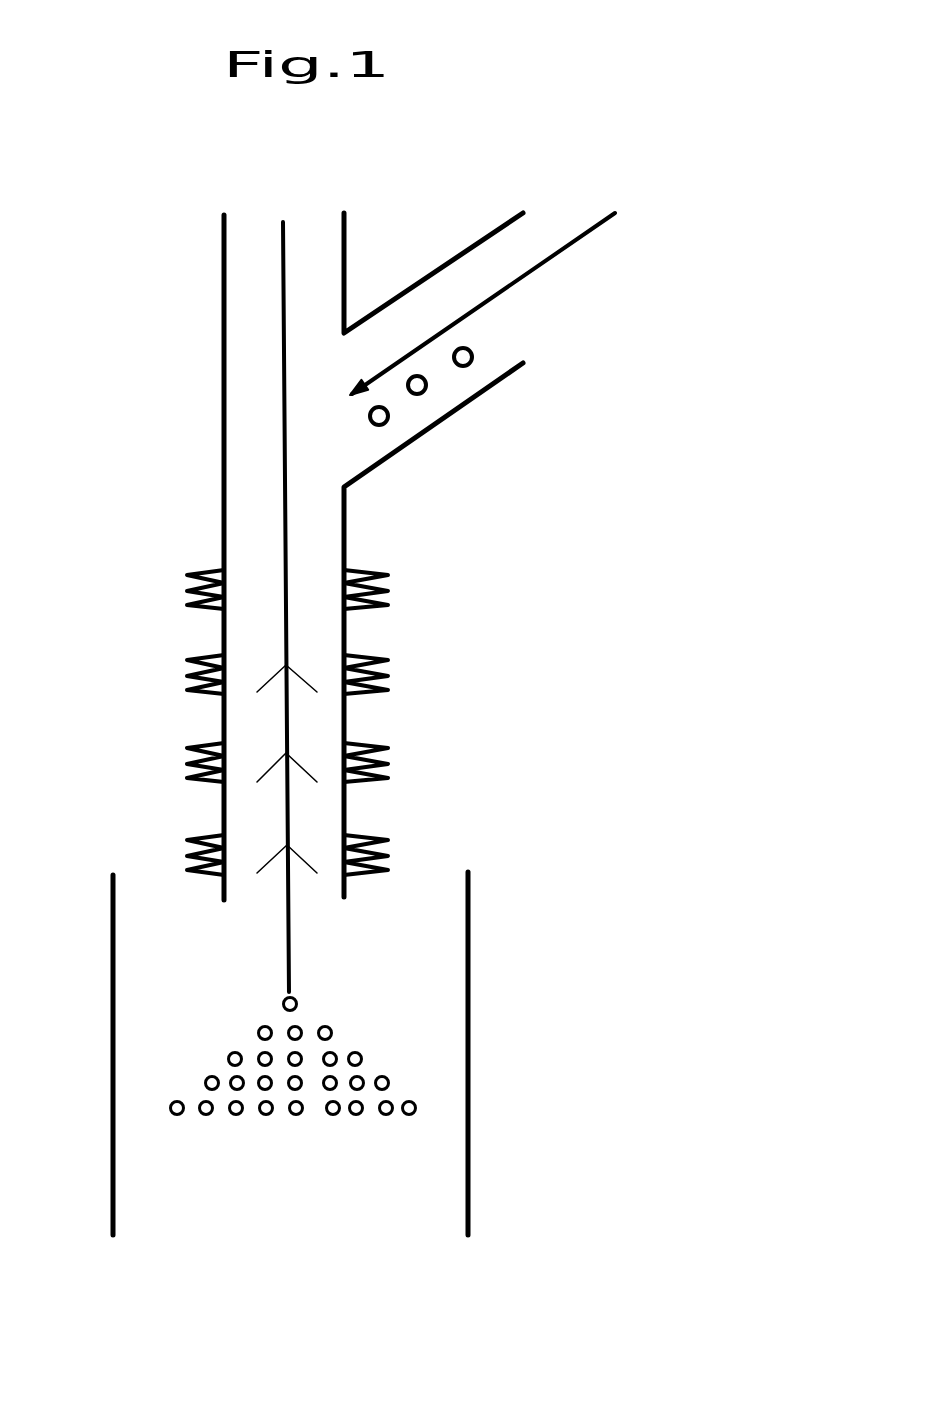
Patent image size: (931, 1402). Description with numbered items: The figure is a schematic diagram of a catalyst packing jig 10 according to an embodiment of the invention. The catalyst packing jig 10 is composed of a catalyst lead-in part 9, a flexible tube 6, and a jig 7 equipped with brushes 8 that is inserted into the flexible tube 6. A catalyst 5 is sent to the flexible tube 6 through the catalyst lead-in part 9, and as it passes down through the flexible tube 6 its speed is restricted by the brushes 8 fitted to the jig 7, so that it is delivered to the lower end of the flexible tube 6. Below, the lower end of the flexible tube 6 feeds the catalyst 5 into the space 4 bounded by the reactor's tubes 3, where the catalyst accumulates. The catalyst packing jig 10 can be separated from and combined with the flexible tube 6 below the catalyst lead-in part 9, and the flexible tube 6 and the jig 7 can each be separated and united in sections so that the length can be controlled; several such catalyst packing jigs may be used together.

The tube 3 is at (113, 1055).
The space 4 is at (408, 1015).
The catalyst 5 is at (473, 357).
The flexible tube 6 is at (350, 810).
The jig 7 is at (283, 275).
The brushes 8 is at (303, 675).
The catalyst lead-in part 9 is at (436, 425).
The catalyst packing jig 10 is at (224, 293).